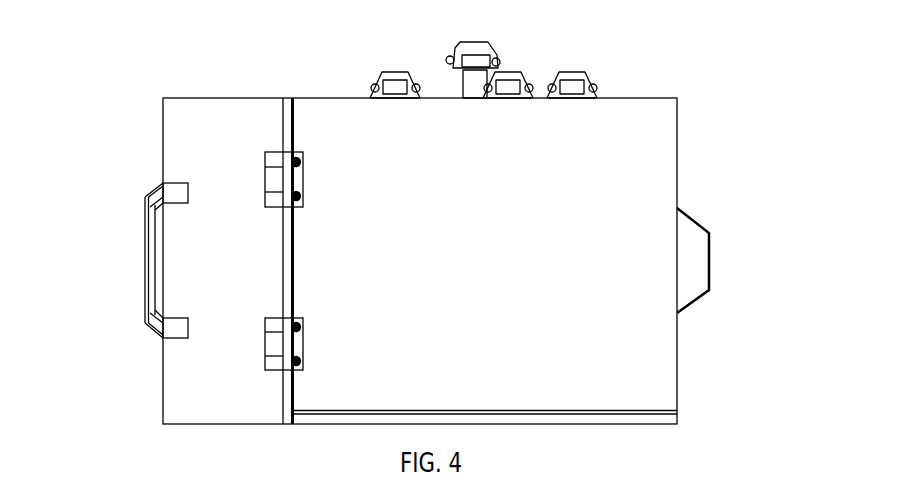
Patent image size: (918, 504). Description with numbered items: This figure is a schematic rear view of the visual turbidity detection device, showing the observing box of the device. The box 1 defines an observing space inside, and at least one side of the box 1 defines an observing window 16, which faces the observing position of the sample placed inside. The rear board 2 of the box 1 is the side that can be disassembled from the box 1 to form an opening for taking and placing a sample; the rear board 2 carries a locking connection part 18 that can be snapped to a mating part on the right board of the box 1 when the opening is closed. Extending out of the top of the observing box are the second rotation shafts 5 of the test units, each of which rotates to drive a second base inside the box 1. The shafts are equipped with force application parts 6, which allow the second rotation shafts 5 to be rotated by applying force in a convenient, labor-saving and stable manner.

The box 1 is at (677, 373).
The rear board 2 is at (227, 98).
The second rotation shaft 5 is at (592, 78).
The force application part 6 is at (487, 52).
The observing window 16 is at (709, 233).
The locking connection part 18 is at (148, 197).